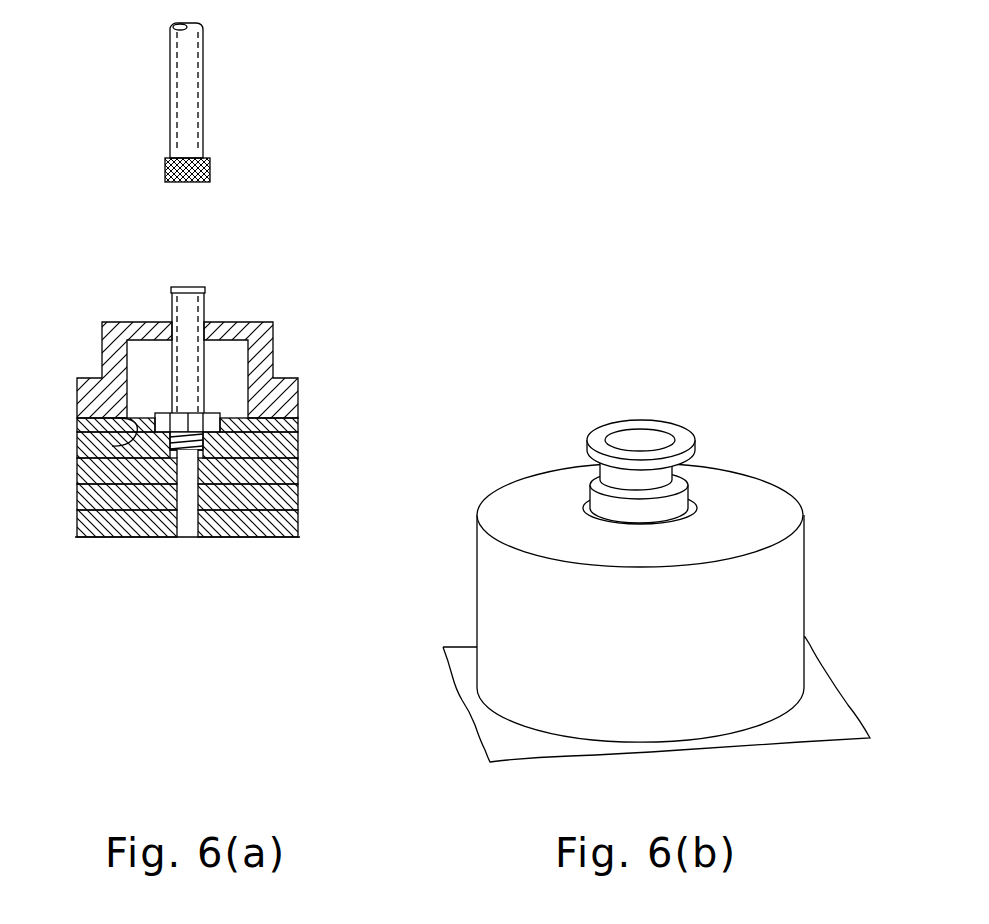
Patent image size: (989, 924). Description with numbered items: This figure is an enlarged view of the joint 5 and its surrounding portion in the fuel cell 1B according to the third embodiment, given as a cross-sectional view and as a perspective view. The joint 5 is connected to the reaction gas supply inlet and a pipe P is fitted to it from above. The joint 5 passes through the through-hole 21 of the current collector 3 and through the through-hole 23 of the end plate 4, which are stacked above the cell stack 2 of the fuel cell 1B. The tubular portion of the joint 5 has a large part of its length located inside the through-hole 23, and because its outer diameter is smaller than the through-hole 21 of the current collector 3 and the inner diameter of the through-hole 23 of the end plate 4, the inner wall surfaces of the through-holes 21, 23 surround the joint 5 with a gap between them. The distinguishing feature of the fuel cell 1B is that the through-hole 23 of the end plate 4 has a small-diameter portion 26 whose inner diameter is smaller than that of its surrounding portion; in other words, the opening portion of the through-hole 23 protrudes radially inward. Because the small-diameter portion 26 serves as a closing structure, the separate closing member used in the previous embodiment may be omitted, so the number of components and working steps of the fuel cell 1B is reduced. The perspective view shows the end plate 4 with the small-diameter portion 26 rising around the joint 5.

In FIG. 6A, the pipe P is at (190, 88).
In FIG. 6A, the fuel cell 1B is at (413, 167).
In FIG. 6A, the cell stack 2 is at (81, 517).
In FIG. 6A, the through-hole 21 is at (80, 445).
In FIG. 6A, the current collector 3 is at (92, 428).
In FIG. 6A, the end plate 4 is at (92, 400).
In FIG. 6B, the end plate 4 is at (476, 669).
In FIG. 6A, the joint 5 is at (207, 313).
In FIG. 6B, the joint 5 is at (690, 436).
In FIG. 6A, the through-hole 23 is at (140, 384).
In FIG. 6A, the small-diameter portion 26 is at (232, 328).
In FIG. 6B, the small-diameter portion 26 is at (727, 512).